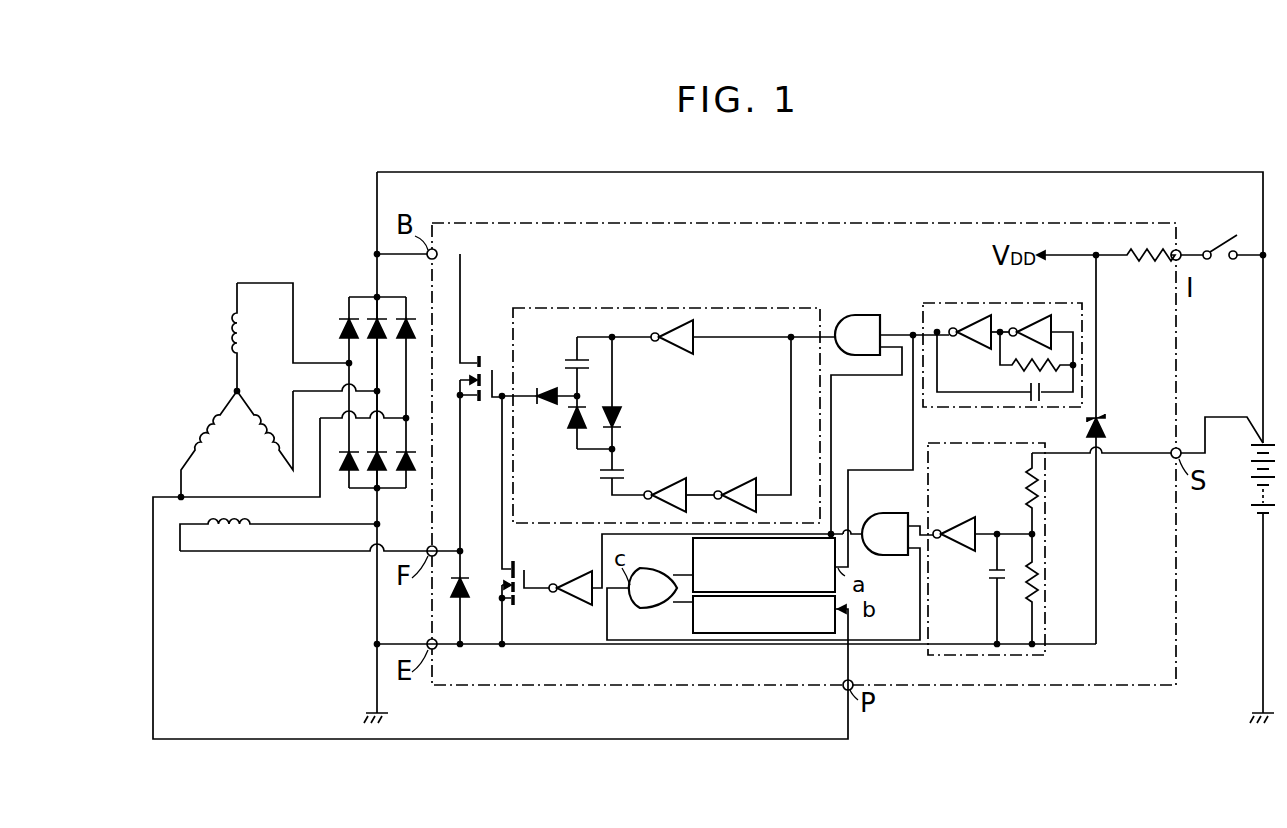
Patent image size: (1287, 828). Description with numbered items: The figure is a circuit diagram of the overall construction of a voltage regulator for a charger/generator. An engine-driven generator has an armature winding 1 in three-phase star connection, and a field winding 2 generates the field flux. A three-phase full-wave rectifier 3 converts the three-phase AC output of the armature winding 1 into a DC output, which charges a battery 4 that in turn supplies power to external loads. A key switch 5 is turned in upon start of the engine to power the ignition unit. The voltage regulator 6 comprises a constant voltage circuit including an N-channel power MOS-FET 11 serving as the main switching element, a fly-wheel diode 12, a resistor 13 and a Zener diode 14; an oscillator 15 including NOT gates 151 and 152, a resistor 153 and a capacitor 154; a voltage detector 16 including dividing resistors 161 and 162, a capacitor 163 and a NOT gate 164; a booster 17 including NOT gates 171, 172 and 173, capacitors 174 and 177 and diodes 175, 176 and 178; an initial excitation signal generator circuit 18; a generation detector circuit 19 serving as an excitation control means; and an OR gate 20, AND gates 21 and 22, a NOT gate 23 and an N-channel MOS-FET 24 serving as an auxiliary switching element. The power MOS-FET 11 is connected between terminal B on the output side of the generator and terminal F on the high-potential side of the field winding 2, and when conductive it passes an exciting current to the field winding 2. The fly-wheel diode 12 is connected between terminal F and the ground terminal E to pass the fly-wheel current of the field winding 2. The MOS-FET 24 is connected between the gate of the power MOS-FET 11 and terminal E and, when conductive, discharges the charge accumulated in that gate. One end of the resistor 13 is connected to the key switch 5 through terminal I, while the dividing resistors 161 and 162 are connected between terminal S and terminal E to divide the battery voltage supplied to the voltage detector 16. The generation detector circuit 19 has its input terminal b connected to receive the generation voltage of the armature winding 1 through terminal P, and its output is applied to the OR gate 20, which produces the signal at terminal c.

The armature winding 1 is at (232, 391).
The field winding 2 is at (230, 551).
The three-phase full-wave rectifier 3 is at (342, 312).
The battery 4 is at (1250, 483).
The key switch 5 is at (1216, 261).
The voltage regulator 6 is at (1030, 690).
The N-channel power MOS-FET 11 is at (481, 355).
The fly-wheel diode 12 is at (465, 598).
The resistor 13 is at (1130, 262).
The Zener diode 14 is at (1106, 426).
The oscillator 15 is at (960, 302).
The voltage detector 16 is at (928, 655).
The booster 17 is at (630, 308).
The initial excitation signal generator circuit 18 is at (692, 555).
The generation detector circuit 19 is at (780, 633).
The OR gate 20 is at (660, 598).
The AND gate 21 is at (860, 313).
The AND gate 22 is at (882, 516).
The NOT gate 23 is at (584, 578).
The N-channel MOS-FET 24 is at (517, 600).
The NOT gate 151 is at (965, 352).
The NOT gate 152 is at (1030, 315).
The resistor 153 is at (1020, 372).
The capacitor 154 is at (1036, 401).
The dividing resistor 161 is at (1028, 483).
The dividing resistor 162 is at (1060, 584).
The capacitor 163 is at (990, 578).
The NOT gate 164 is at (962, 517).
The NOT gate 171 is at (682, 360).
The NOT gate 172 is at (743, 479).
The NOT gate 173 is at (679, 479).
The capacitor 174 is at (600, 480).
The diode 175 is at (620, 412).
The diode 176 is at (574, 430).
The capacitor 177 is at (572, 362).
The diode 178 is at (548, 404).